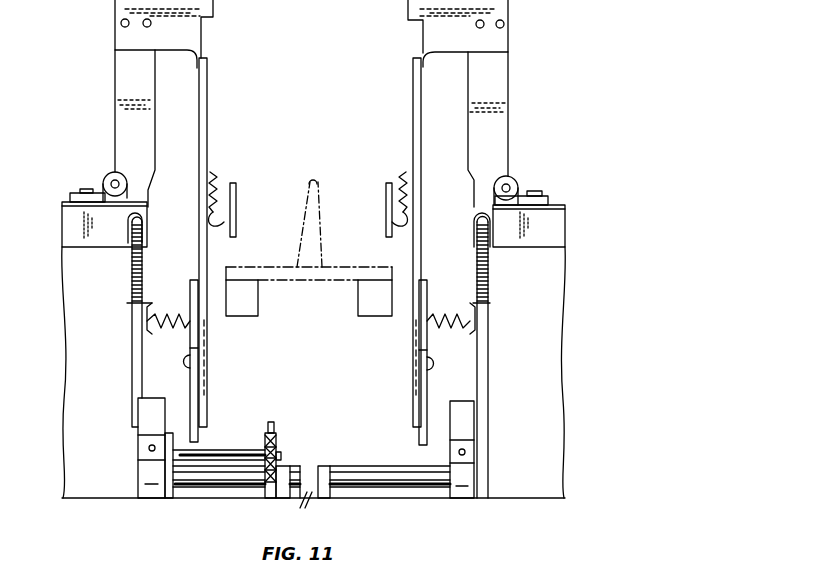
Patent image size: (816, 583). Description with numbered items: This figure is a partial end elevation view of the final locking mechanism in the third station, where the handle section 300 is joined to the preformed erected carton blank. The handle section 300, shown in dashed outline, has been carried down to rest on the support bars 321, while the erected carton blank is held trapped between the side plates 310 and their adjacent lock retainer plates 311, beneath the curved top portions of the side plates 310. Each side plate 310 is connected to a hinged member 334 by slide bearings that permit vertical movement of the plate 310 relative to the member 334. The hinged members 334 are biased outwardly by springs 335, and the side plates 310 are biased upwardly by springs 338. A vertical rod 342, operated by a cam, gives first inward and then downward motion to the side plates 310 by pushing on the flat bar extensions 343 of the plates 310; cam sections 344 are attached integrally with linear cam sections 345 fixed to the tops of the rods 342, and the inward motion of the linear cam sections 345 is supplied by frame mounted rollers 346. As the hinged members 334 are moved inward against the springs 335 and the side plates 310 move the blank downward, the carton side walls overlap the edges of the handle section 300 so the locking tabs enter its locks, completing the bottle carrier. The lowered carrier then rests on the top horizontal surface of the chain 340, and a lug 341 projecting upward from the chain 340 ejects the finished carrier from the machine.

The handle section 300 is at (320, 190).
The side plate 310 is at (213, 373).
The lock retainer plate 311 is at (236, 193).
The support bar 321 is at (380, 295).
The hinged member 334 is at (427, 345).
The spring 335 is at (175, 292).
The spring 338 is at (216, 187).
The chain 340 is at (276, 442).
The lug 341 is at (272, 422).
The vertical rod 342 is at (490, 265).
The flat bar extension 343 is at (208, 127).
The cam section 344 is at (192, 42).
The linear cam section 345 is at (133, 70).
The frame mounted roller 346 is at (112, 173).